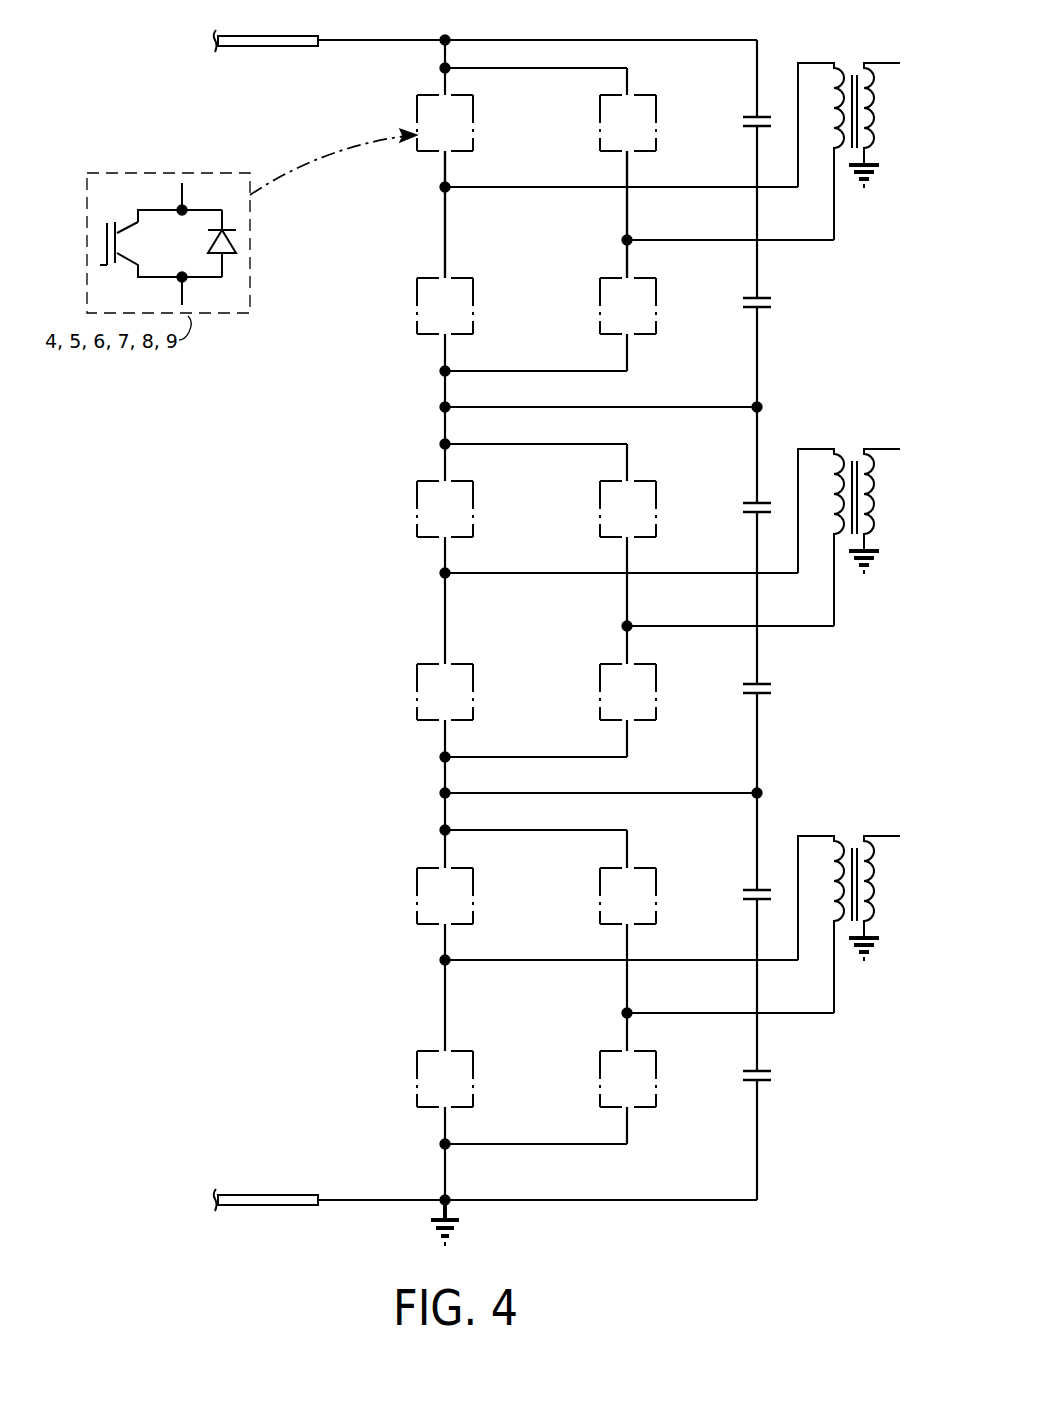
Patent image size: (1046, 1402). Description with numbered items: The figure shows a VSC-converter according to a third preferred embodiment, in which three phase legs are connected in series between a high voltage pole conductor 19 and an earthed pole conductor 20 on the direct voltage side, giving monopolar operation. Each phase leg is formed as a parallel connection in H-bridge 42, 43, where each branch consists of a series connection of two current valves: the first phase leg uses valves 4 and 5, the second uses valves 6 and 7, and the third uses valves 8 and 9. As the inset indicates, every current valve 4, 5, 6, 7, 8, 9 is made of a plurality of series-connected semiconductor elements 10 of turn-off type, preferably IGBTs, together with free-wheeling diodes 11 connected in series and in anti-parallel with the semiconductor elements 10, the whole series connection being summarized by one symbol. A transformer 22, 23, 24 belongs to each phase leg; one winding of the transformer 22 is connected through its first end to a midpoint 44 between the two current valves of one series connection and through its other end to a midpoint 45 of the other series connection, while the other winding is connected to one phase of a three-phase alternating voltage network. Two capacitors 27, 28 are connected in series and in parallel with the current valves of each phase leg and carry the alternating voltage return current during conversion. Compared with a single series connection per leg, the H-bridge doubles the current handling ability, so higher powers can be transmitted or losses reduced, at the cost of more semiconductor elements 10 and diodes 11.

The current valve 4 is at (417, 118).
The current valve 5 is at (473, 305).
The current valve 6 is at (417, 504).
The current valve 7 is at (473, 691).
The current valve 8 is at (417, 891).
The current valve 9 is at (473, 1078).
The semiconductor element 10 is at (107, 233).
The free-wheeling diode 11 is at (237, 245).
The pole conductor 19 is at (351, 40).
The pole conductor 20 is at (353, 1198).
The transformer 22 is at (860, 62).
The transformer 23 is at (860, 448).
The transformer 24 is at (860, 835).
The capacitor 27 is at (749, 113).
The capacitor 28 is at (771, 297).
The H-bridge series connection 42 is at (445, 236).
The H-bridge series connection 43 is at (627, 206).
The midpoint 44 is at (445, 187).
The midpoint 45 is at (627, 240).